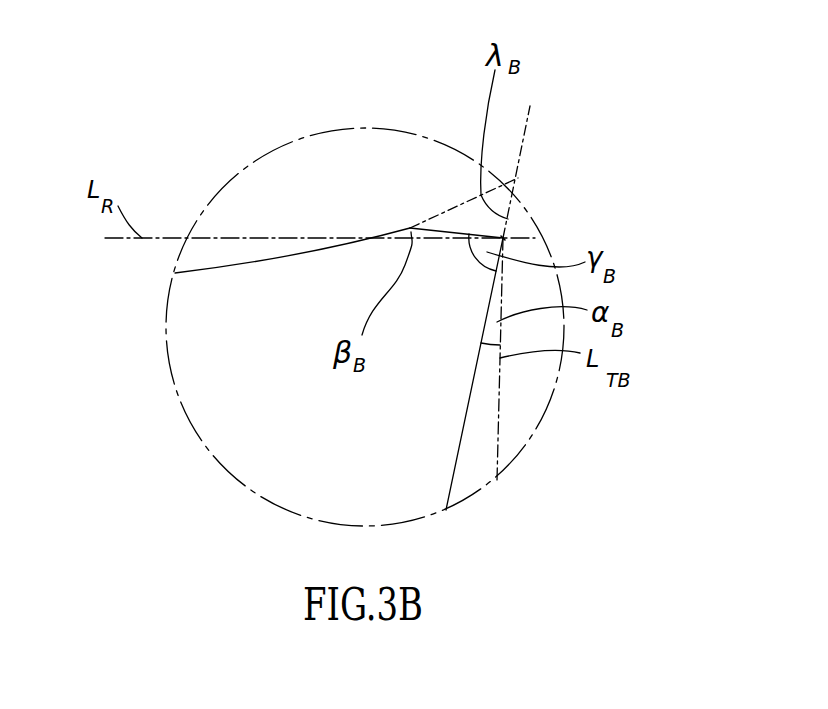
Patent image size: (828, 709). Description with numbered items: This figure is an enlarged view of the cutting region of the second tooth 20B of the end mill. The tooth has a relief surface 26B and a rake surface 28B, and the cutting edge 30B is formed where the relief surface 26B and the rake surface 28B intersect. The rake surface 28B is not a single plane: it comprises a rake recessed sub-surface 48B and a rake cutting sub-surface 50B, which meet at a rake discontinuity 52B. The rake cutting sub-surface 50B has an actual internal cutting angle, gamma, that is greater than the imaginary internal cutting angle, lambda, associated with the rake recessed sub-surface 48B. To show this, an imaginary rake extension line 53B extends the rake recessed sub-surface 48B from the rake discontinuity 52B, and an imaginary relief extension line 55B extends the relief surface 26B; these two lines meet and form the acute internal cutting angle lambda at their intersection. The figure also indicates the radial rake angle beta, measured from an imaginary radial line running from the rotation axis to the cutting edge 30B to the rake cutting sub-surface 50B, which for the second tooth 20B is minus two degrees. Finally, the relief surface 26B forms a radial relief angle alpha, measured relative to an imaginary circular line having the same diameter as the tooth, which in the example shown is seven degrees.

The second tooth 20B is at (323, 280).
The rake surface 28B is at (365, 145).
The rake discontinuity 52B is at (409, 227).
The imaginary rake extension line 53B is at (466, 203).
The imaginary relief extension line 55B is at (515, 182).
The cutting edge 30B is at (504, 238).
The rake recessed sub-surface 48B is at (317, 252).
The rake cutting sub-surface 50B is at (455, 234).
The relief surface 26B is at (467, 418).